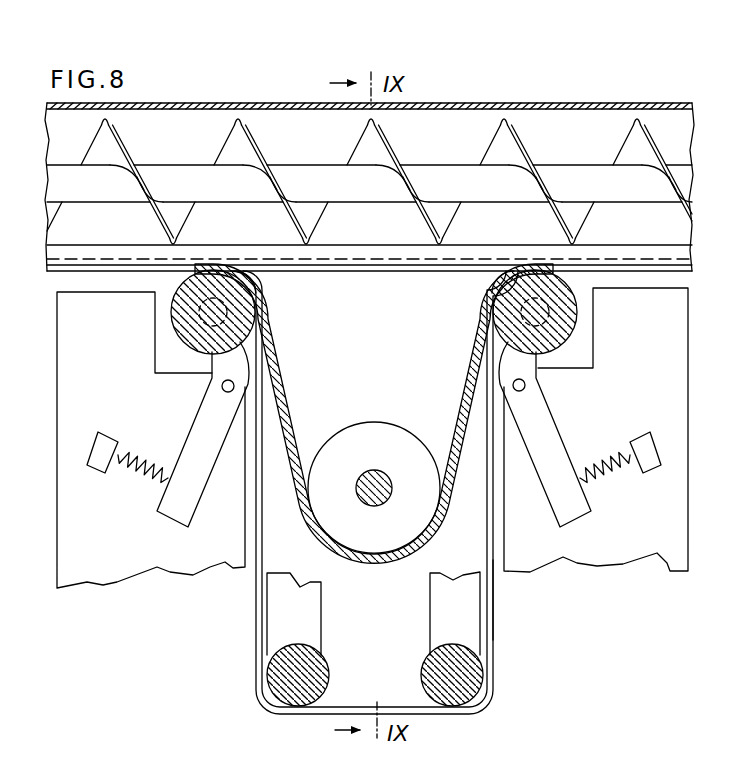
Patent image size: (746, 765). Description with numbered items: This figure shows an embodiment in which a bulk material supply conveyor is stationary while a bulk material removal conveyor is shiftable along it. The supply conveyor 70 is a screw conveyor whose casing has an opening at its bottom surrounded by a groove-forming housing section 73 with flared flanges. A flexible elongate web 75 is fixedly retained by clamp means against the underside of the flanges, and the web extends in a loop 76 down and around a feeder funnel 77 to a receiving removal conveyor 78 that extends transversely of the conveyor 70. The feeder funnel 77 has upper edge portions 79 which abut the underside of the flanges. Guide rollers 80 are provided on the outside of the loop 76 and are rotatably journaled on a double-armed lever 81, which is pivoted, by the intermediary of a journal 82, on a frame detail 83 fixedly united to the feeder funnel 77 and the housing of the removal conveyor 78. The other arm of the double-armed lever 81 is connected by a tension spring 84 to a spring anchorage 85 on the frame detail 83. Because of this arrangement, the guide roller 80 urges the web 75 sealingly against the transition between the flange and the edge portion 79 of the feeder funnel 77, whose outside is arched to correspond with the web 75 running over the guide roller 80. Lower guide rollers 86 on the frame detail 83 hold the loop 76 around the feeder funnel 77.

The conveyor 70 is at (562, 130).
The groove-forming housing section 73 is at (373, 252).
The flexible elongate web 75 is at (257, 611).
The loop 76 is at (500, 592).
The feeder funnel 77 is at (294, 372).
The receiving removal conveyor 78 is at (397, 438).
The upper edge portions 79 is at (265, 283).
The guide rollers 80 is at (178, 313).
The double-armed lever 81 is at (203, 432).
The journal 82 is at (221, 387).
The frame detail 83 is at (122, 560).
The tension spring 84 is at (128, 478).
The spring anchorage 85 is at (101, 440).
The lower guide rollers 86 is at (267, 677).